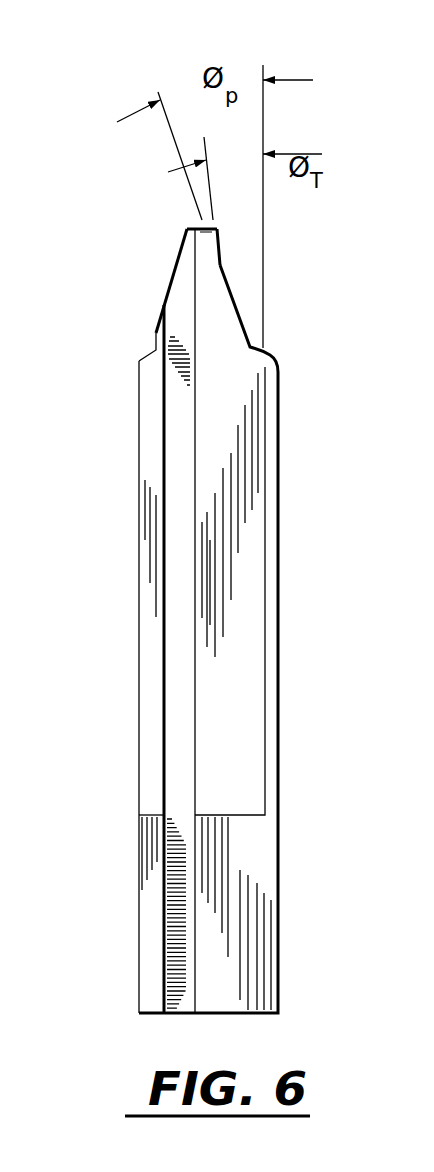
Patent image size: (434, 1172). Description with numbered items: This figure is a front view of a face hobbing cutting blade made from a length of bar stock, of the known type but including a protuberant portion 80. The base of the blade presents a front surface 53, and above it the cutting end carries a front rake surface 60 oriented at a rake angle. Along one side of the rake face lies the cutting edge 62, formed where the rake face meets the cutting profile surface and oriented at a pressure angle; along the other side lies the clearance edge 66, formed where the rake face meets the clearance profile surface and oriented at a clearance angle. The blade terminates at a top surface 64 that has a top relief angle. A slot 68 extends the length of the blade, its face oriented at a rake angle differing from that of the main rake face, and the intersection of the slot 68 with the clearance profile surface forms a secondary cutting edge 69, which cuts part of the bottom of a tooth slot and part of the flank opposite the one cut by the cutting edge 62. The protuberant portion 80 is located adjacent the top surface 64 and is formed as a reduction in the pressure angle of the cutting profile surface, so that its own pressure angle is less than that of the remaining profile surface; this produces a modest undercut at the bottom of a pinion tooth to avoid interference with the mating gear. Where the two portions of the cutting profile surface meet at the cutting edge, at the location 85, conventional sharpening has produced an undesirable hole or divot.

The front surface 53 is at (150, 930).
The front rake surface 60 is at (150, 398).
The cutting edge 62 is at (238, 310).
The top surface 64 is at (197, 226).
The clearance edge 66 is at (156, 333).
The slot 68 is at (180, 528).
The secondary cutting edge 69 is at (170, 290).
The protuberant portion 80 is at (217, 227).
The location of intersection 85 is at (222, 265).